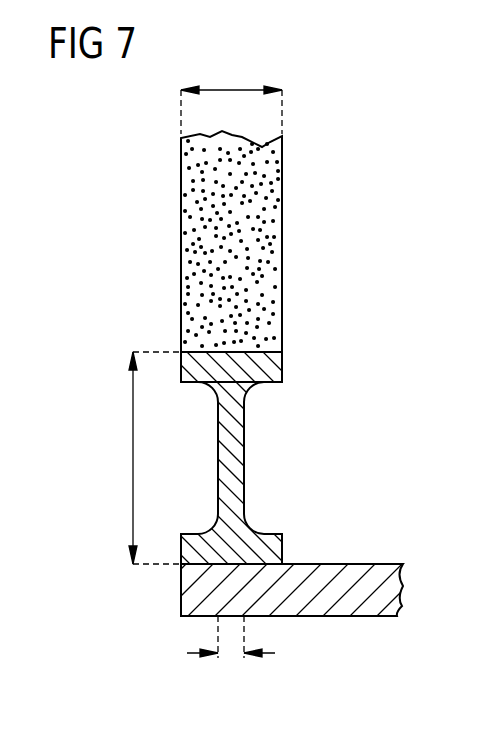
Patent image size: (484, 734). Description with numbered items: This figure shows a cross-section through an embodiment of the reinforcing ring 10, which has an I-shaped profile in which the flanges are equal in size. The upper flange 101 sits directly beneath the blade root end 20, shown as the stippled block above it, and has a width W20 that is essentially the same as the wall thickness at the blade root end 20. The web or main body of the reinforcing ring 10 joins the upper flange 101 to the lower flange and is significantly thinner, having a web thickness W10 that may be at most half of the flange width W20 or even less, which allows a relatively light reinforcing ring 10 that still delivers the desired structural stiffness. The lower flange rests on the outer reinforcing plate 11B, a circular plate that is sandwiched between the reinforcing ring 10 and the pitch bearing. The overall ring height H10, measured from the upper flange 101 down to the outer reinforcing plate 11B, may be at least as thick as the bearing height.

The blade root end 20 is at (281, 251).
The reinforcing ring 10 is at (244, 410).
The flange 101 is at (272, 369).
The outer reinforcing plate 11B is at (357, 575).
The flange width W20 is at (232, 88).
The ring height H10 is at (132, 459).
The web thickness W10 is at (230, 654).